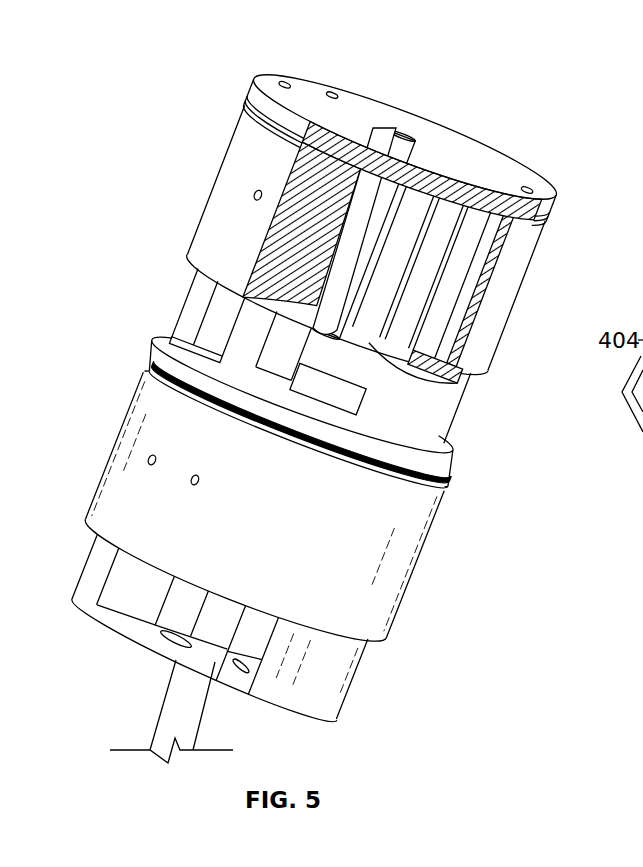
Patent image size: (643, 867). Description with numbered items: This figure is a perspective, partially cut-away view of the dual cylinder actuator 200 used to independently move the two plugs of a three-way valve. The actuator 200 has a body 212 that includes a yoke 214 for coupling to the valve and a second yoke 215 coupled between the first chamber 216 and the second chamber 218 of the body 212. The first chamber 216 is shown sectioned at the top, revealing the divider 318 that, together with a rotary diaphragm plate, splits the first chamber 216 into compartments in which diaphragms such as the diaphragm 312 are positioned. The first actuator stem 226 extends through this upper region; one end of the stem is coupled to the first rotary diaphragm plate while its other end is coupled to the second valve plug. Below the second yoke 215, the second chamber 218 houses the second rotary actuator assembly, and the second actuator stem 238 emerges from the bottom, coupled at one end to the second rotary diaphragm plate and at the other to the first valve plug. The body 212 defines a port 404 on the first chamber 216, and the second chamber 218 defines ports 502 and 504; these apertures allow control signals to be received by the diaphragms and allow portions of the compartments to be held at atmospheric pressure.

The actuator 200 is at (559, 83).
The body 212 is at (153, 373).
The yoke 214 is at (97, 580).
The second yoke 215 is at (440, 430).
The first chamber 216 is at (509, 300).
The second chamber 218 is at (418, 521).
The first actuator stem 226 is at (318, 341).
The second actuator stem 238 is at (212, 634).
The diaphragm 312 is at (485, 251).
The divider 318 is at (310, 176).
The port 404 is at (252, 195).
The port 502 is at (146, 459).
The port 504 is at (189, 481).